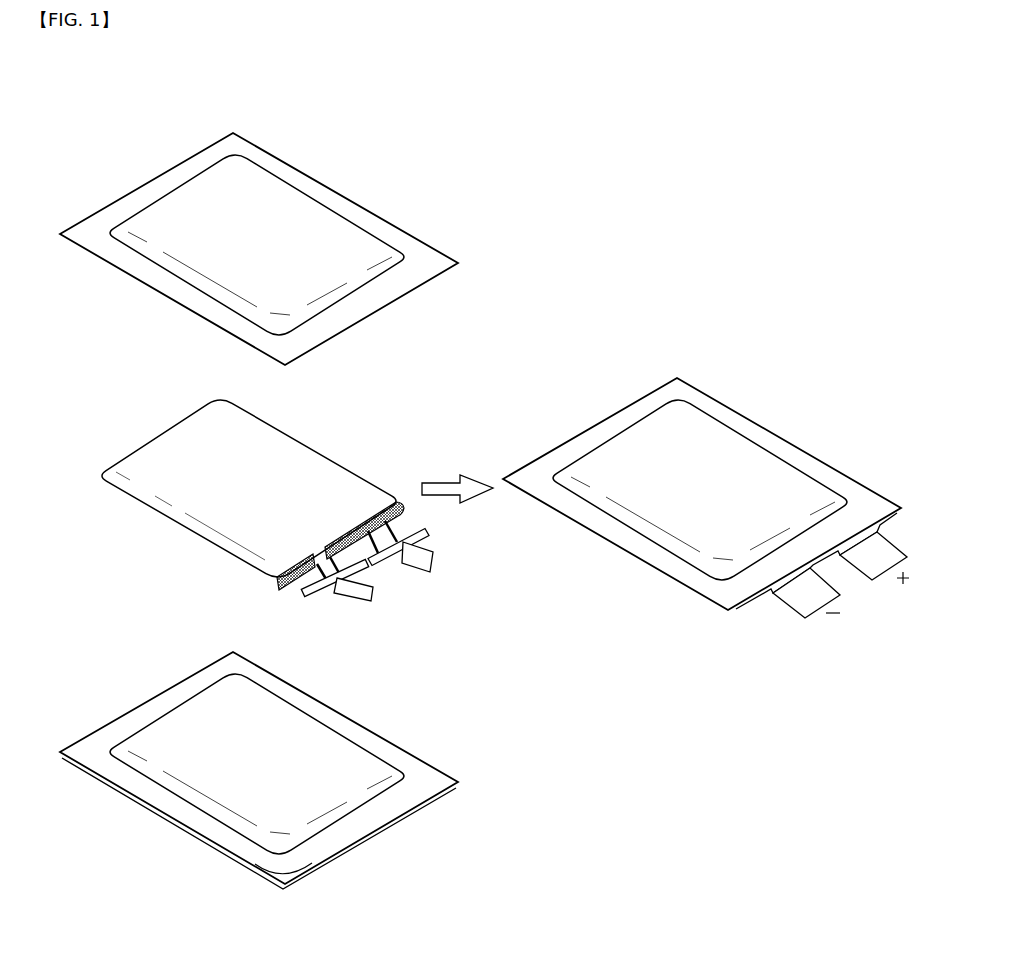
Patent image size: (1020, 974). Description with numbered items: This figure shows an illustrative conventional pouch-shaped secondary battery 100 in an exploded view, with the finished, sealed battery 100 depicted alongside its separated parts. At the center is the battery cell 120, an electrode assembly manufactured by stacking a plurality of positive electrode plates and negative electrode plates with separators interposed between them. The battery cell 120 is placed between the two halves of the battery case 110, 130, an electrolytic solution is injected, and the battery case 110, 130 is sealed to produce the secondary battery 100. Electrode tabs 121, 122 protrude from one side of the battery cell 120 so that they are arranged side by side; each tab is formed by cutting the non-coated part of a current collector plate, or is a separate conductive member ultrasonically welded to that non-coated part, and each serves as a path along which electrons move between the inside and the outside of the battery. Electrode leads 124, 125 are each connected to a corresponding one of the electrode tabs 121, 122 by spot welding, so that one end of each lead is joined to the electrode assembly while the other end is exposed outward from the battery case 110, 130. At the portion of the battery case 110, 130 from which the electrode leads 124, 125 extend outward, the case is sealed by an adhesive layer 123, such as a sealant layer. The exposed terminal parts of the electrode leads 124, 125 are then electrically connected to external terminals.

The secondary battery 100 is at (706, 494).
The battery case 110 is at (447, 258).
The battery cell 120 is at (285, 488).
The electrode tab 121 is at (385, 521).
The electrode tab 122 is at (297, 565).
The adhesive layer 123 is at (420, 543).
The electrode lead 124 is at (427, 561).
The electrode lead 125 is at (334, 593).
The battery case 130 is at (418, 755).